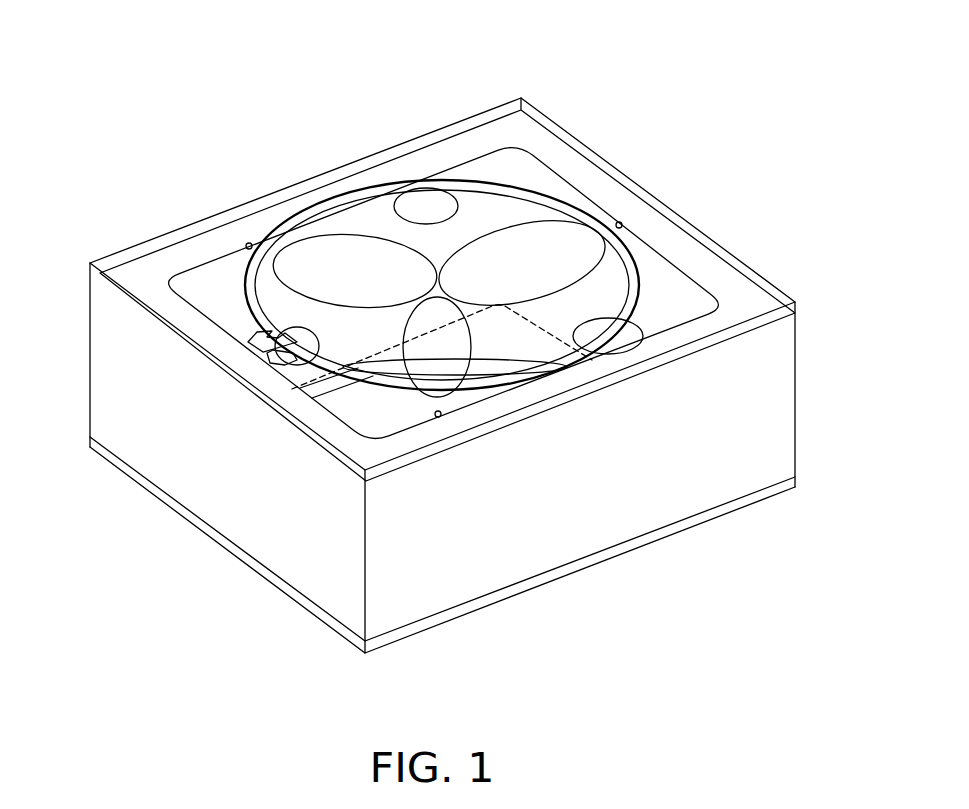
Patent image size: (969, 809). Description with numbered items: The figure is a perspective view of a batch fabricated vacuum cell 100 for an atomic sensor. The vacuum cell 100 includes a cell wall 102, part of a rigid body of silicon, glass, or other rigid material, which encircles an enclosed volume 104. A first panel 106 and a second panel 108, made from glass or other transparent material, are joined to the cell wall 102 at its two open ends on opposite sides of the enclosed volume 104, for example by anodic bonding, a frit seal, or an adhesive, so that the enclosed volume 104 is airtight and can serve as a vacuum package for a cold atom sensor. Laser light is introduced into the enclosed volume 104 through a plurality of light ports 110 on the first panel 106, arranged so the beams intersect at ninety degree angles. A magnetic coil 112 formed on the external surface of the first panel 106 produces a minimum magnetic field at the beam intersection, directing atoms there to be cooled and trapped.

The vacuum cell 100 is at (464, 339).
The cell wall 102 is at (464, 378).
The enclosed volume 104 is at (675, 290).
The first panel 106 is at (243, 388).
The second panel 108 is at (275, 573).
The light ports 110 is at (246, 246).
The magnetic coil 112 is at (495, 182).